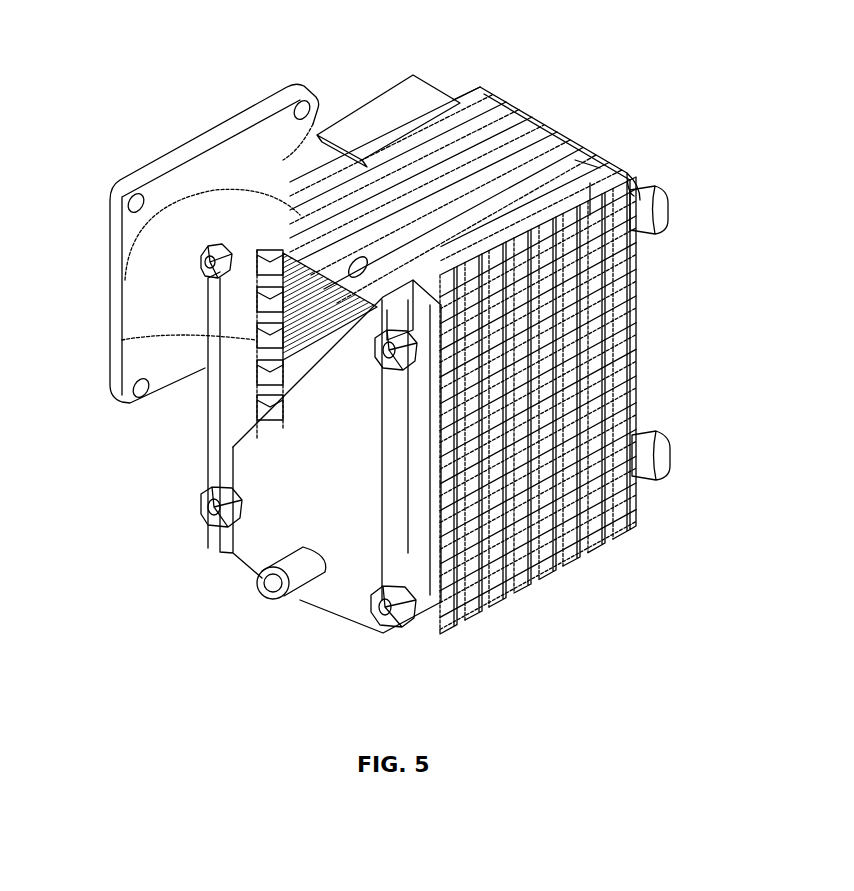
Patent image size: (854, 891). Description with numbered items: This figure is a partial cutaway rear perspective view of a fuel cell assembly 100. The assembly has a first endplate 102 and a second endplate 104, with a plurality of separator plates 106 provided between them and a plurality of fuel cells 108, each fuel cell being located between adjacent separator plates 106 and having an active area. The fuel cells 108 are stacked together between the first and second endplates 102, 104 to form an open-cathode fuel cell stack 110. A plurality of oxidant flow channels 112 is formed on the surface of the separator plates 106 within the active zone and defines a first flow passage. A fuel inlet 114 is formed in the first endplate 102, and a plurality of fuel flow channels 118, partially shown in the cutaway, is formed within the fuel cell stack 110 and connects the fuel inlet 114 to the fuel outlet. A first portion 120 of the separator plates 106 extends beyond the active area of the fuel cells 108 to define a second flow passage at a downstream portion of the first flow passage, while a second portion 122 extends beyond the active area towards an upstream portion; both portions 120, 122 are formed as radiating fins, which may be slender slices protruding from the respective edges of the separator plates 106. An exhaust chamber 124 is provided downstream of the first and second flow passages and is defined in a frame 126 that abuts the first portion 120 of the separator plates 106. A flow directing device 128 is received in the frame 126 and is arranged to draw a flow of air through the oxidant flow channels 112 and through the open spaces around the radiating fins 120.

The fuel cell assembly 100 is at (383, 368).
The first endplate 102 is at (262, 473).
The second endplate 104 is at (596, 148).
The separator plates 106 is at (498, 180).
The fuel cells 108 is at (540, 190).
The open-cathode fuel cell stack 110 is at (592, 640).
The oxidant flow channels 112 is at (300, 302).
The fuel inlet 114 is at (285, 553).
The fuel flow channels 118 is at (330, 191).
The first portion of the separator plates 120 is at (300, 360).
The second portion of the separator plates 122 is at (630, 344).
The exhaust chamber 124 is at (300, 345).
The frame 126 is at (305, 215).
The flow directing device 128 is at (163, 247).